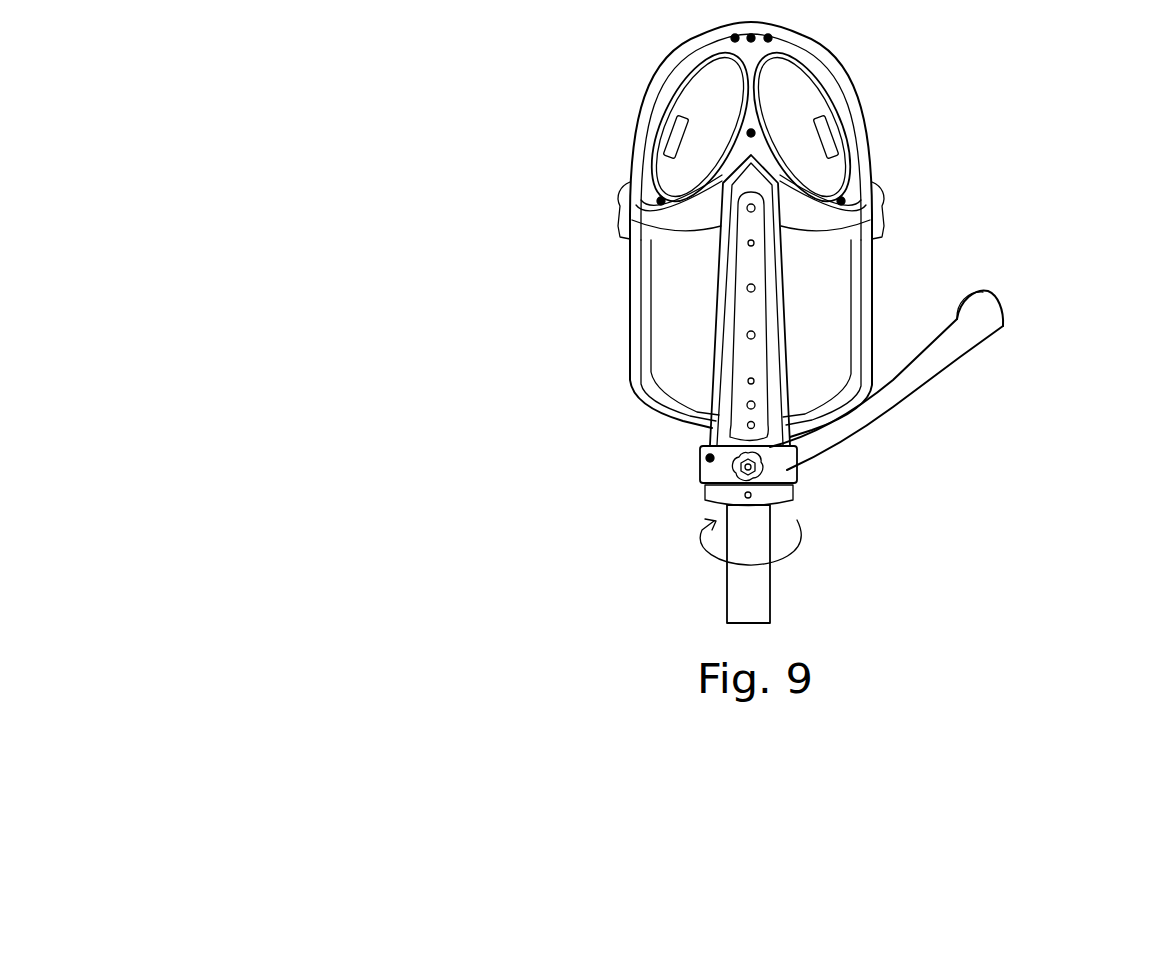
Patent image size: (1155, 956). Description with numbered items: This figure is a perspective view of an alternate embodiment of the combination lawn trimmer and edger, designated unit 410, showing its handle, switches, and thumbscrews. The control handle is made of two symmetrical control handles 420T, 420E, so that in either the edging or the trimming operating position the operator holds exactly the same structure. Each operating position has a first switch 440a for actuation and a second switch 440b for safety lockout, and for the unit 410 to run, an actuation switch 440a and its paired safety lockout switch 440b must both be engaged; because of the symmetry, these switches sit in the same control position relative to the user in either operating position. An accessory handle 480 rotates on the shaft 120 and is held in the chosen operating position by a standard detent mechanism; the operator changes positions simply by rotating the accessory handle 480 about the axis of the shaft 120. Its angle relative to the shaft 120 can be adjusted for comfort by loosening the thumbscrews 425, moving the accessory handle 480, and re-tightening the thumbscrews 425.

The unit 410 is at (345, 279).
The control handle 420T is at (663, 67).
The control handle 420E is at (832, 111).
The first switch 440a is at (750, 125).
The second switch 440b is at (740, 209).
The accessory handle 480 is at (950, 380).
The thumbscrews 425 is at (671, 497).
The shaft 120 is at (813, 564).